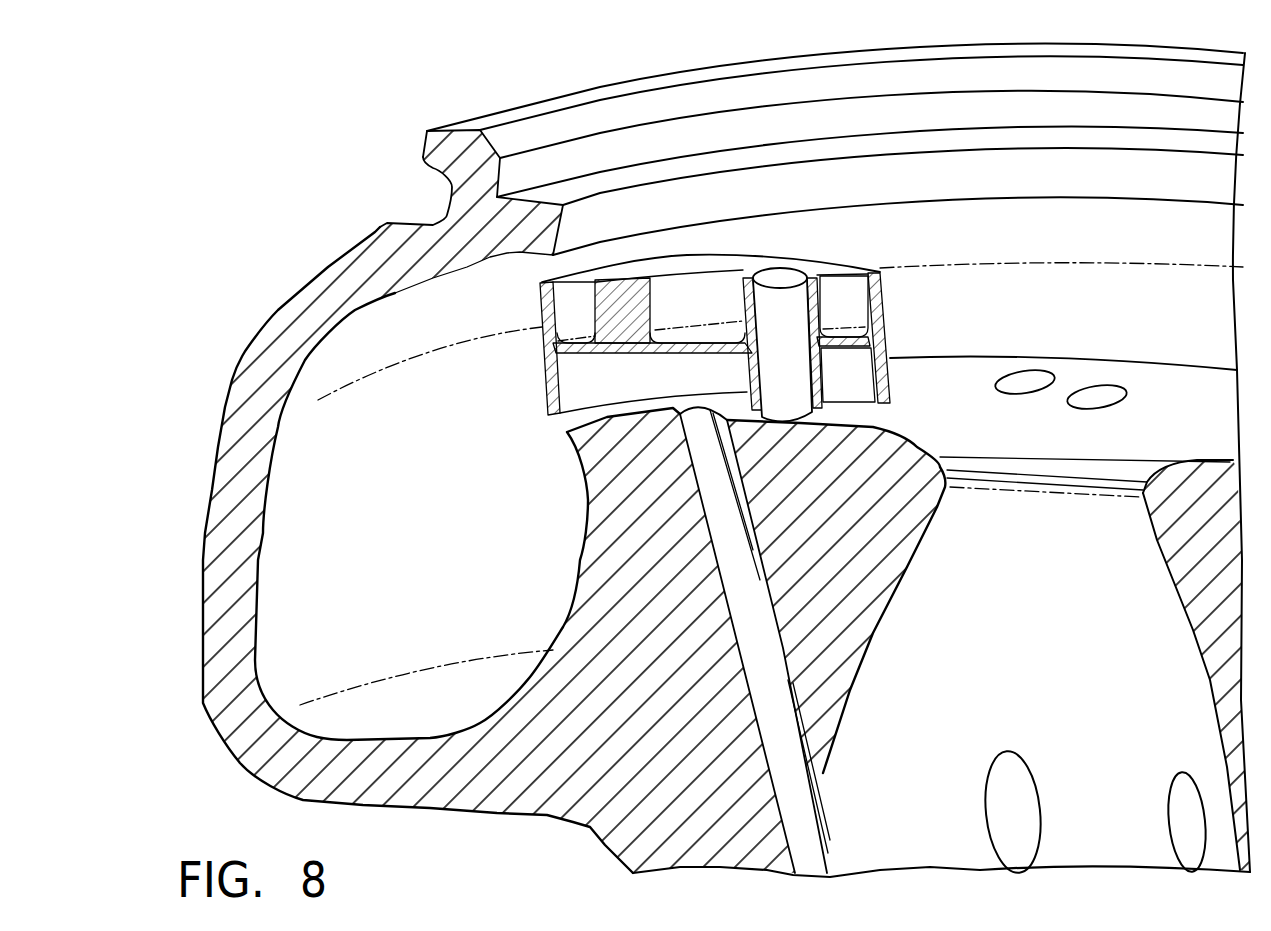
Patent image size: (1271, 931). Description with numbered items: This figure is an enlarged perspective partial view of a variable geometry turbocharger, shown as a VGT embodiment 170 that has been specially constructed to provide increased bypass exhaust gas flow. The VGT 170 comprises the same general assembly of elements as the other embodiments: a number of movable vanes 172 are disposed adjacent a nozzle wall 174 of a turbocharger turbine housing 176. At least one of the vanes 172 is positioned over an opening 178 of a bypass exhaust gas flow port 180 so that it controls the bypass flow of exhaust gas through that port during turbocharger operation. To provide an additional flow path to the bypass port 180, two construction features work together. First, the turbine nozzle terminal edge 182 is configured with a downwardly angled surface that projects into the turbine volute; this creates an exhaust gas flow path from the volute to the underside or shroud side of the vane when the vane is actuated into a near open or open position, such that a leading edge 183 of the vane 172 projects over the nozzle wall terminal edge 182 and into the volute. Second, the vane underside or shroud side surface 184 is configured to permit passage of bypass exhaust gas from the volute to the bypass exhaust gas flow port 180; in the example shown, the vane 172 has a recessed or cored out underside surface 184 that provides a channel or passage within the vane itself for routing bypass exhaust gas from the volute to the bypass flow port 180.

The VGT embodiment 170 is at (340, 150).
The movable vane 172 is at (780, 278).
The nozzle wall 174 is at (890, 400).
The turbocharger turbine housing 176 is at (706, 95).
The opening 178 is at (787, 835).
The bypass exhaust gas flow port 180 is at (652, 342).
The turbine nozzle terminal edge 182 is at (285, 650).
The leading edge 183 is at (542, 307).
The vane underside surface 184 is at (723, 253).